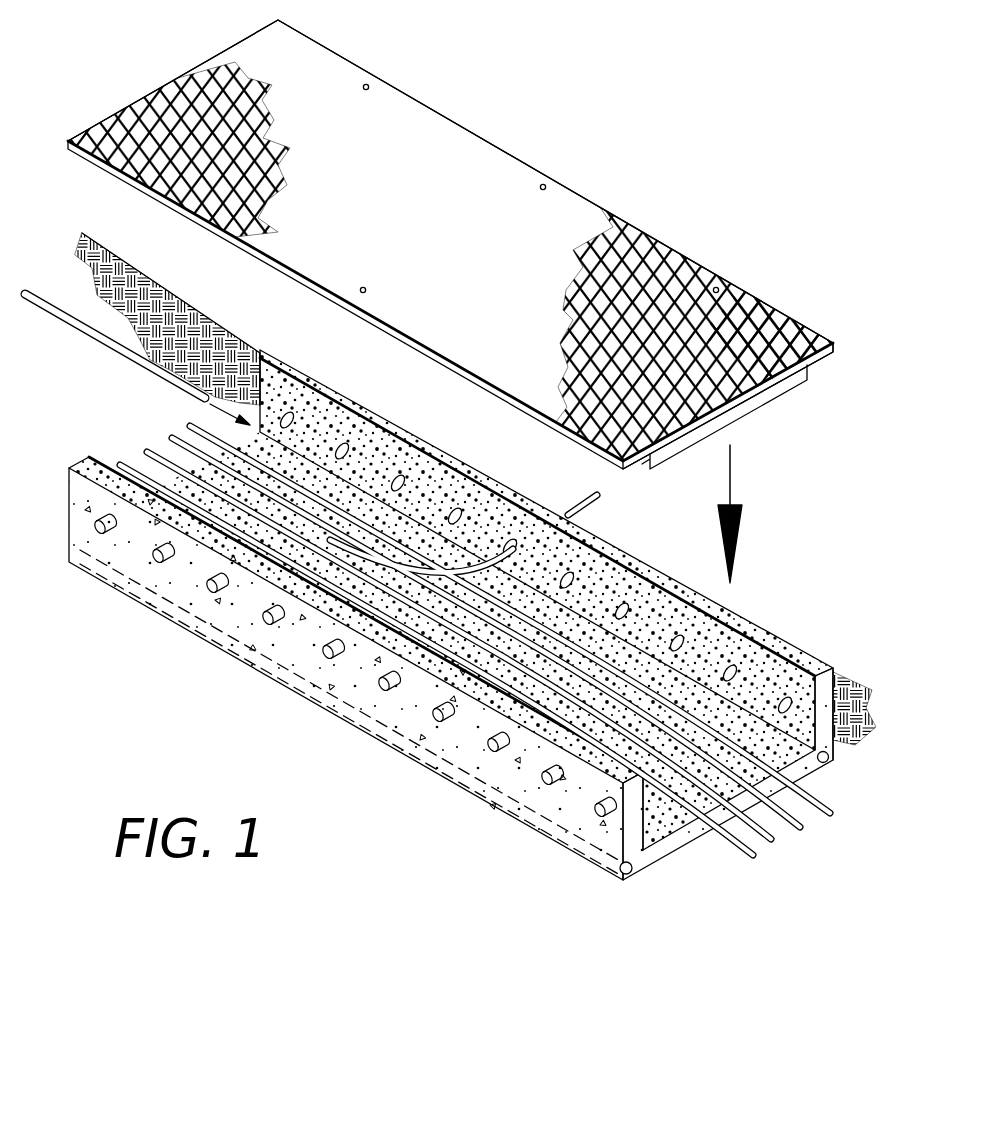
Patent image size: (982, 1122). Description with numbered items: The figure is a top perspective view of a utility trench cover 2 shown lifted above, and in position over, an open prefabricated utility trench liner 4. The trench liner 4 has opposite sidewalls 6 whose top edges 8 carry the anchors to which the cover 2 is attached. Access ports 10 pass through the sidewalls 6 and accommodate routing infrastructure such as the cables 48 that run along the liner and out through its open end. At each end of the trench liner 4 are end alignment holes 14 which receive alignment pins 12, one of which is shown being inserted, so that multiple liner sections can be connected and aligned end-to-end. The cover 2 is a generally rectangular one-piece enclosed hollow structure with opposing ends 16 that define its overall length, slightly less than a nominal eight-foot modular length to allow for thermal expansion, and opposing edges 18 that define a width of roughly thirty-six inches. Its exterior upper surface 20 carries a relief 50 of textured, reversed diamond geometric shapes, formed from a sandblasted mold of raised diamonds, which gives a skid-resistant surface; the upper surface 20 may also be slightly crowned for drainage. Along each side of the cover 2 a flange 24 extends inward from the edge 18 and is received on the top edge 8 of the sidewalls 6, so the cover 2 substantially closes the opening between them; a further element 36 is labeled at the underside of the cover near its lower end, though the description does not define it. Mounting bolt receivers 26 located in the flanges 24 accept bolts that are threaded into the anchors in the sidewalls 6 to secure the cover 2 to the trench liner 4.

The utility trench cover 2 is at (600, 107).
The utility trench liner 4 is at (217, 315).
The sidewalls 6 is at (68, 540).
The top edges 8 is at (812, 662).
The access ports 10 is at (318, 640).
The alignment pins 12 is at (37, 290).
The end alignment holes 14 is at (112, 578).
The opposing ends 16 is at (182, 77).
The opposing edges 18 is at (452, 118).
The upper surface 20 is at (434, 227).
The flange 24 is at (826, 353).
The mounting bolt receivers 26 is at (366, 84).
The flange 36 is at (642, 463).
The cables 48 is at (582, 505).
The relief 50 is at (797, 312).